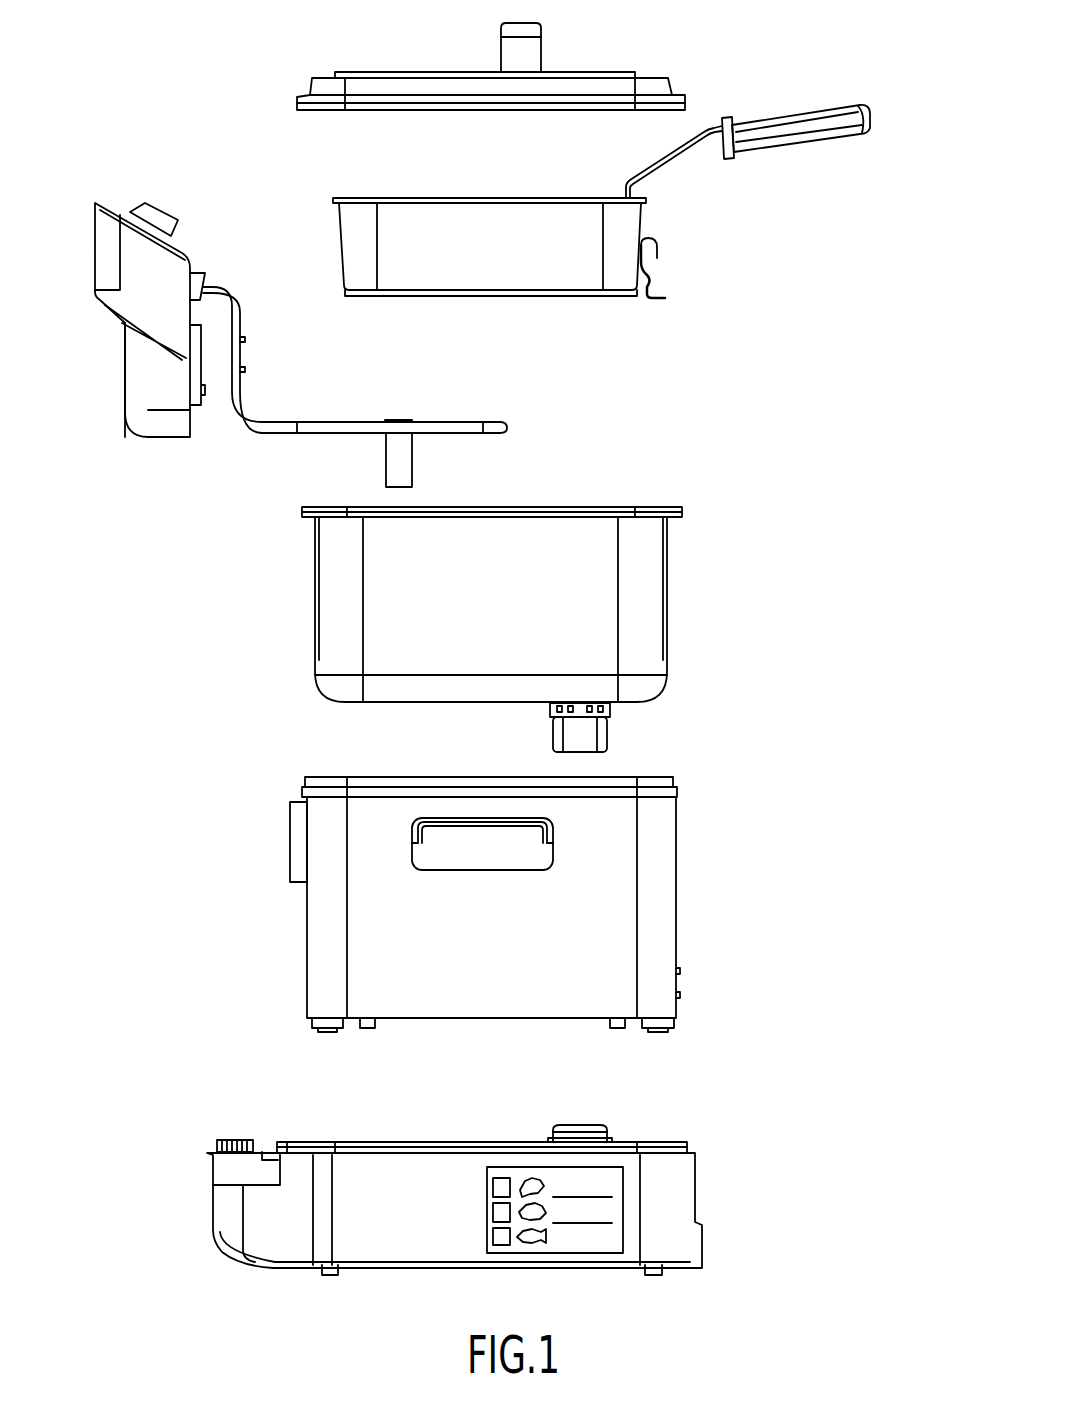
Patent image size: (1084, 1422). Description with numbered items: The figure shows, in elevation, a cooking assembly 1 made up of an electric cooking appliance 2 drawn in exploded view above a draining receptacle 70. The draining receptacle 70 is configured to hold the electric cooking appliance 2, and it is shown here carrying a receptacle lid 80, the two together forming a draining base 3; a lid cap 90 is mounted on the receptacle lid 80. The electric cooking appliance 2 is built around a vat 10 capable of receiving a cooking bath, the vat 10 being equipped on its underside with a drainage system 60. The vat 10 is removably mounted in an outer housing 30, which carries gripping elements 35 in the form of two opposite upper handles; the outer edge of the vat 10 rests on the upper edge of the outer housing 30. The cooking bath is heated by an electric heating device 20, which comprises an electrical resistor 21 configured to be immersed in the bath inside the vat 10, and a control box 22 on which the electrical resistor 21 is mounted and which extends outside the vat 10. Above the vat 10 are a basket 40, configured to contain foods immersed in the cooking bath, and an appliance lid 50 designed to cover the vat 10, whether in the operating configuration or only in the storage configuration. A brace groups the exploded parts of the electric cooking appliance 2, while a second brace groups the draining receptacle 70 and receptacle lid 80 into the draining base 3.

The cooking assembly 1 is at (160, 1026).
The electric cooking appliance 2 is at (872, 55).
The draining base 3 is at (872, 1120).
The vat 10 is at (283, 628).
The electric heating device 20 is at (232, 452).
The electrical resistor 21 is at (338, 422).
The control box 22 is at (110, 203).
The outer housing 30 is at (280, 928).
The gripping elements 35 is at (450, 855).
The basket 40 is at (675, 279).
The appliance lid 50 is at (617, 66).
The drainage system 60 is at (603, 735).
The draining receptacle 70 is at (397, 1240).
The receptacle lid 80 is at (376, 1142).
The lid cap 90 is at (585, 1125).